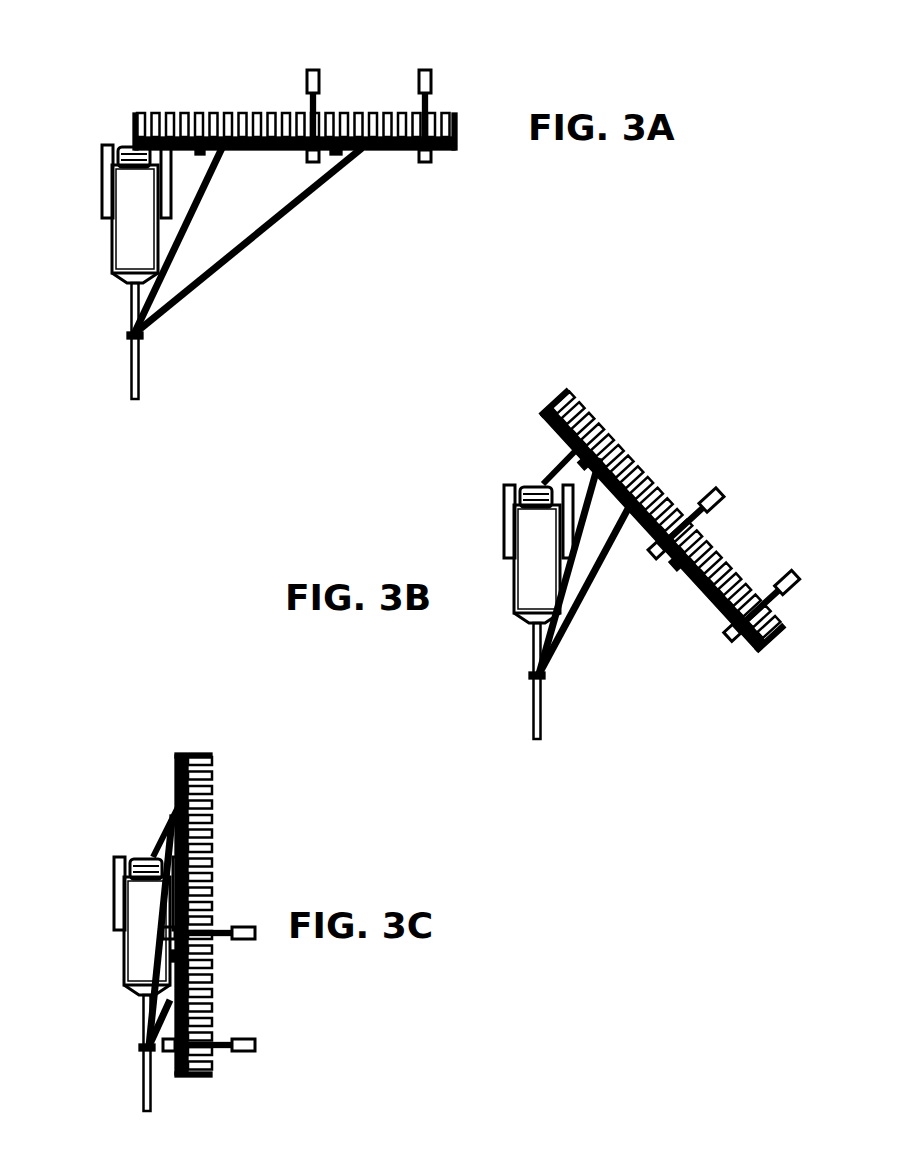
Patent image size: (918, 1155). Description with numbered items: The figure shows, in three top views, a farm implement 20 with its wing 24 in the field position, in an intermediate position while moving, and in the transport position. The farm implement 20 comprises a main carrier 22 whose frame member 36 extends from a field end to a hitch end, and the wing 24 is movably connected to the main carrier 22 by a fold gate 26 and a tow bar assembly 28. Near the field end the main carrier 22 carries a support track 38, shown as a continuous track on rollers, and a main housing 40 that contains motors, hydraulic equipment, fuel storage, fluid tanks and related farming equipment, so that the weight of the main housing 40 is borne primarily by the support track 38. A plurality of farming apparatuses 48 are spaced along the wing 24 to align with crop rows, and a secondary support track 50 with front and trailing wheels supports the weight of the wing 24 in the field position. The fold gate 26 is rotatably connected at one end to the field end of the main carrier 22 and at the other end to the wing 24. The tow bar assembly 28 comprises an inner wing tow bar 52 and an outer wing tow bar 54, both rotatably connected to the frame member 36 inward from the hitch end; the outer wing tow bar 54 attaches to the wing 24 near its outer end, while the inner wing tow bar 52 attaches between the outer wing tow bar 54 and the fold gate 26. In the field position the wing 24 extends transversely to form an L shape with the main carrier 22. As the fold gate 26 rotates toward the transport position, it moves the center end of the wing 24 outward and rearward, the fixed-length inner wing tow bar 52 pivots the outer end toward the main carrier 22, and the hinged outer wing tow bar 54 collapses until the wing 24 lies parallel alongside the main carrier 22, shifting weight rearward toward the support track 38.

In FIG. 3A, the farm implement 20 is at (141, 55).
In FIG. 3B, the farm implement 20 is at (713, 385).
In FIG. 3C, the farm implement 20 is at (110, 760).
In FIG. 3A, the main carrier 22 is at (104, 280).
In FIG. 3B, the main carrier 22 is at (508, 612).
In FIG. 3C, the main carrier 22 is at (110, 990).
In FIG. 3A, the wing 24 is at (277, 107).
In FIG. 3B, the wing 24 is at (660, 462).
In FIG. 3C, the wing 24 is at (226, 857).
In FIG. 3B, the fold gate 26 is at (548, 470).
In FIG. 3C, the fold gate 26 is at (160, 822).
In FIG. 3A, the tow bar assembly 28 is at (248, 241).
In FIG. 3A, the frame member 36 is at (128, 345).
In FIG. 3B, the frame member 36 is at (536, 690).
In FIG. 3C, the frame member 36 is at (146, 1068).
In FIG. 3A, the support track 38 is at (106, 170).
In FIG. 3B, the support track 38 is at (506, 502).
In FIG. 3C, the support track 38 is at (112, 875).
In FIG. 3A, the main housing 40 is at (130, 248).
In FIG. 3B, the main housing 40 is at (535, 578).
In FIG. 3C, the main housing 40 is at (142, 955).
In FIG. 3A, the farming apparatuses 48 is at (138, 115).
In FIG. 3B, the farming apparatuses 48 is at (576, 400).
In FIG. 3C, the farming apparatuses 48 is at (210, 764).
In FIG. 3A, the secondary support track 50 is at (320, 70).
In FIG. 3B, the secondary support track 50 is at (728, 490).
In FIG. 3C, the secondary support track 50 is at (222, 943).
In FIG. 3A, the inner wing tow bar 52 is at (190, 250).
In FIG. 3B, the inner wing tow bar 52 is at (583, 607).
In FIG. 3C, the inner wing tow bar 52 is at (159, 1023).
In FIG. 3A, the outer wing tow bar 54 is at (272, 228).
In FIG. 3B, the outer wing tow bar 54 is at (605, 548).
In FIG. 3C, the outer wing tow bar 54 is at (160, 933).